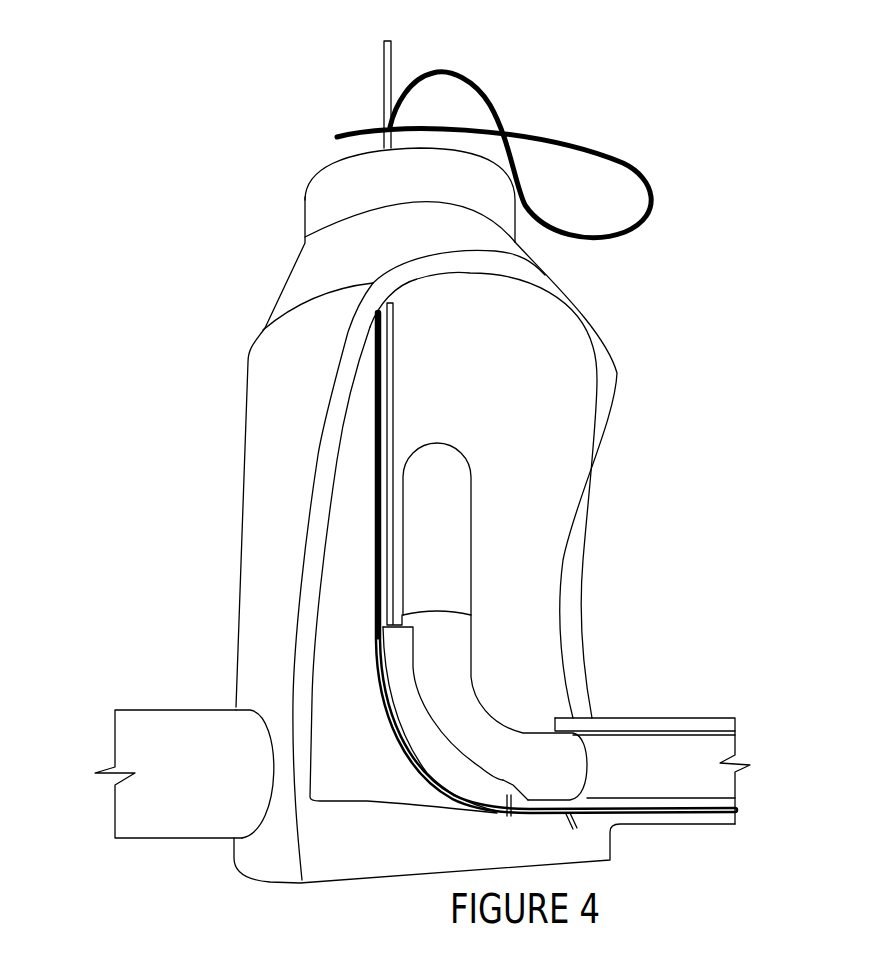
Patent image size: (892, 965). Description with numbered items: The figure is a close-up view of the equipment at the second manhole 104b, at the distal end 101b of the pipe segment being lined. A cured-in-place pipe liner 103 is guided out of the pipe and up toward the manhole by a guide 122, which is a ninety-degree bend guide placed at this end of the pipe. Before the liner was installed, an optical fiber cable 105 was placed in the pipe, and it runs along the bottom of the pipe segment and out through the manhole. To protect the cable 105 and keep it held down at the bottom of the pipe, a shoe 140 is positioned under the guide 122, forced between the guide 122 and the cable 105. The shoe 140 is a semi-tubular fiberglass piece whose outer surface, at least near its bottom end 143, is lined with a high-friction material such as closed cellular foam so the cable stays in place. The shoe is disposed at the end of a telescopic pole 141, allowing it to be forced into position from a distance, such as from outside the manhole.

The second manhole 104b is at (349, 157).
The telescopic pole 141 is at (415, 52).
The optical fiber cable 105 is at (622, 163).
The guide 122 is at (472, 713).
The shoe 140 is at (411, 683).
The bottom end of shoe 143 is at (512, 797).
The distal end of pipe segment 101b is at (637, 718).
The cured-in-place pipe liner 103 is at (690, 782).